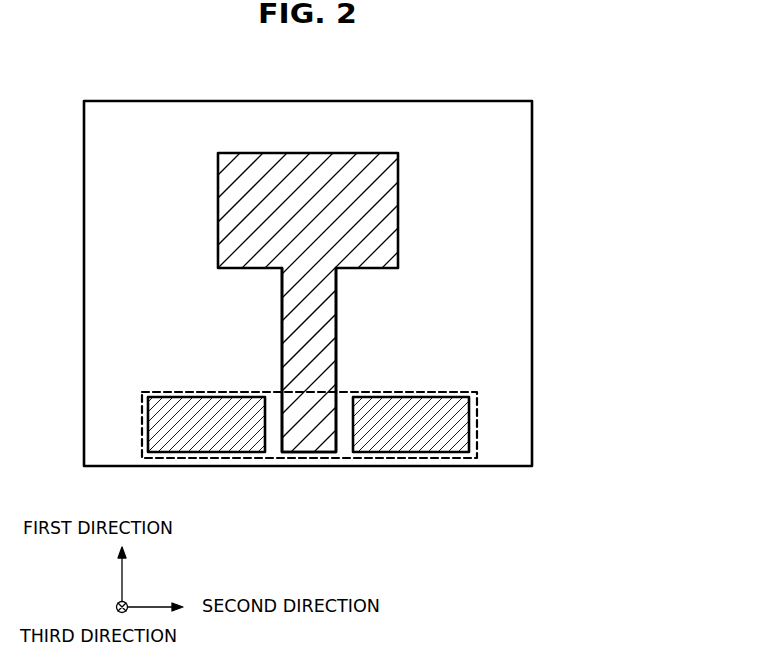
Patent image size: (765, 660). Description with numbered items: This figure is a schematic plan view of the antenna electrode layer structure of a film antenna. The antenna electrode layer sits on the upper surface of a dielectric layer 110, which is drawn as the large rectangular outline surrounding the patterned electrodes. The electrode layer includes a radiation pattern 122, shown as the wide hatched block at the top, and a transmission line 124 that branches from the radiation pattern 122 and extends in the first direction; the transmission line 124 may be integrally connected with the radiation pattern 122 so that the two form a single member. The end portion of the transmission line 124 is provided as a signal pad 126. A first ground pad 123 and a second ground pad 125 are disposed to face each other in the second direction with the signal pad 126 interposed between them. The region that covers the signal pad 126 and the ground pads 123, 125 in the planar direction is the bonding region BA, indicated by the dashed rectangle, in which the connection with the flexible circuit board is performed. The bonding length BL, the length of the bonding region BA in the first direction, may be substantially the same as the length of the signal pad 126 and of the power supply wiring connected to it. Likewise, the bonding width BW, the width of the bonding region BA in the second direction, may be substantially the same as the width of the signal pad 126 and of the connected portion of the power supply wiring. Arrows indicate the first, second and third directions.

The dielectric layer 110 is at (517, 358).
The radiation pattern 122 is at (308, 173).
The transmission line 124 is at (332, 303).
The signal pad 126 is at (284, 453).
The first ground pad 123 is at (205, 453).
The second ground pad 125 is at (407, 448).
The bonding region BA is at (477, 423).
The bonding width BW is at (335, 381).
The bonding length BL is at (309, 394).